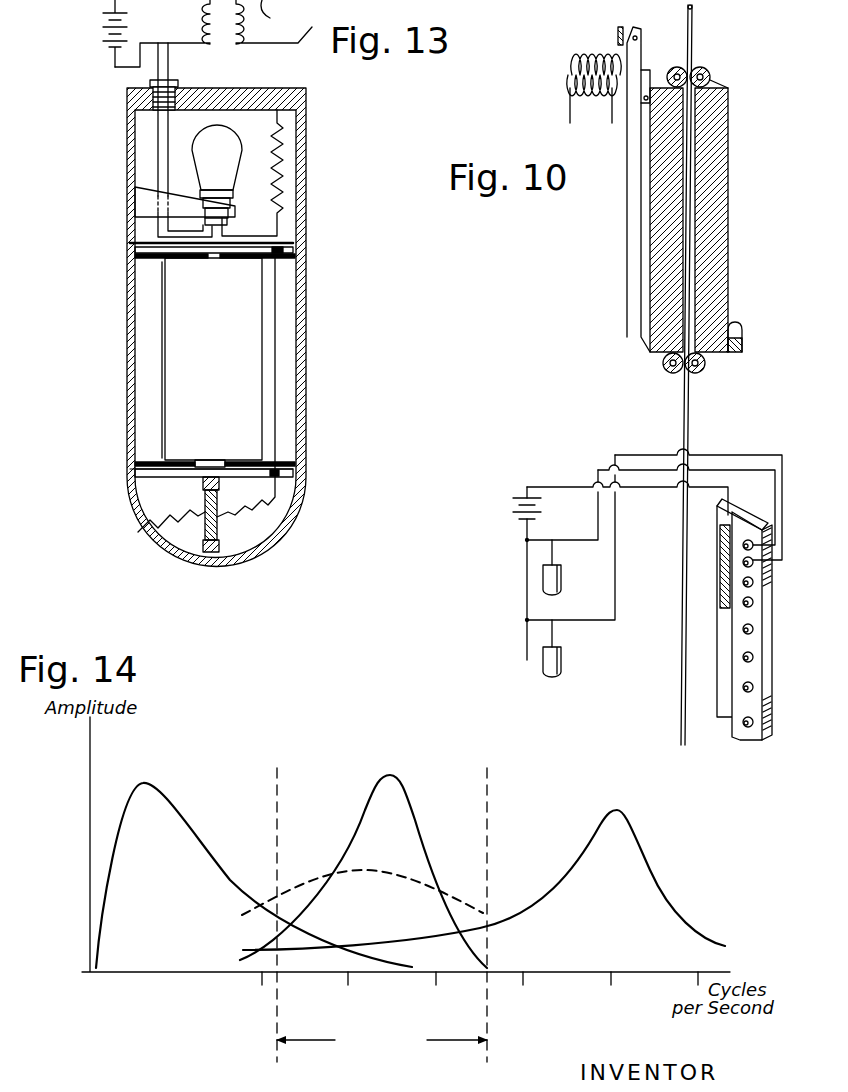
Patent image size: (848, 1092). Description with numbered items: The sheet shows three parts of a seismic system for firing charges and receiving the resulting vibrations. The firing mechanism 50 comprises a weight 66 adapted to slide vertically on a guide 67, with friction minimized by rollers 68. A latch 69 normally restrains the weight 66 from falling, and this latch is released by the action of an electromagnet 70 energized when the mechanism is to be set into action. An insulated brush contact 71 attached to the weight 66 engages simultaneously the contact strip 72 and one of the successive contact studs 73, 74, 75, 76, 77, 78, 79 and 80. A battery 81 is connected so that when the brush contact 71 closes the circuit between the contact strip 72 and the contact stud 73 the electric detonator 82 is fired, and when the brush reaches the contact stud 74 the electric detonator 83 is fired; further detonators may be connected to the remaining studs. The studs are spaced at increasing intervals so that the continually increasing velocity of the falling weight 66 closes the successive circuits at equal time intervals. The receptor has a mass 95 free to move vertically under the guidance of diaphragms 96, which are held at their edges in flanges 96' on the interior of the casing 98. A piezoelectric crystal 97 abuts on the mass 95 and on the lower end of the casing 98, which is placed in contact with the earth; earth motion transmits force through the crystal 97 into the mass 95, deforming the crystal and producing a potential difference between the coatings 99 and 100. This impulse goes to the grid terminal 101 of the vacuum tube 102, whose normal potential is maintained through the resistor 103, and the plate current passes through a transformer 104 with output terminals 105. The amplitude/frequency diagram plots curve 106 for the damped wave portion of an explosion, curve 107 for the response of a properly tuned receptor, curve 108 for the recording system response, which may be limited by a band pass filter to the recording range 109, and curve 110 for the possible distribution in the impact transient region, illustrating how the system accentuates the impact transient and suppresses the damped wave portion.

In FIG. 10, the firing mechanism 50 is at (615, 241).
In FIG. 10, the weight 66 is at (729, 217).
In FIG. 10, the guide 67 is at (690, 412).
In FIG. 10, the rollers 68 is at (704, 66).
In FIG. 10, the latch 69 is at (637, 53).
In FIG. 10, the electromagnet 70 is at (594, 60).
In FIG. 10, the insulated brush contact 71 is at (743, 330).
In FIG. 10, the contact strip 72 is at (719, 535).
In FIG. 10, the contact stud 73 is at (754, 540).
In FIG. 10, the contact stud 74 is at (744, 563).
In FIG. 10, the contact stud 75 is at (744, 583).
In FIG. 10, the contact stud 76 is at (744, 604).
In FIG. 10, the contact stud 77 is at (744, 631).
In FIG. 10, the contact stud 78 is at (744, 659).
In FIG. 10, the contact stud 79 is at (744, 689).
In FIG. 10, the contact stud 80 is at (745, 726).
In FIG. 10, the battery 81 is at (512, 500).
In FIG. 10, the electric detonator 82 is at (562, 580).
In FIG. 10, the electric detonator 83 is at (562, 668).
In FIG. 13, the mass 95 is at (229, 355).
In FIG. 13, the diaphragms 96 is at (247, 360).
In FIG. 13, the flanges 96' is at (247, 355).
In FIG. 13, the piezoelectric crystal 97 is at (219, 488).
In FIG. 13, the casing 98 is at (307, 369).
In FIG. 13, the coating 99 is at (204, 506).
In FIG. 13, the coating 100 is at (218, 527).
In FIG. 13, the grid terminal 101 is at (278, 236).
In FIG. 13, the vacuum tube 102 is at (233, 155).
In FIG. 13, the resistor 103 is at (284, 178).
In FIG. 13, the transformer 104 is at (214, 45).
In FIG. 13, the output terminals 105 is at (312, 27).
In FIG. 14, the curve 106 is at (150, 783).
In FIG. 14, the curve 107 is at (645, 848).
In FIG. 14, the curve 108 is at (408, 800).
In FIG. 14, the range 109 is at (462, 1015).
In FIG. 14, the curve 110 is at (447, 895).